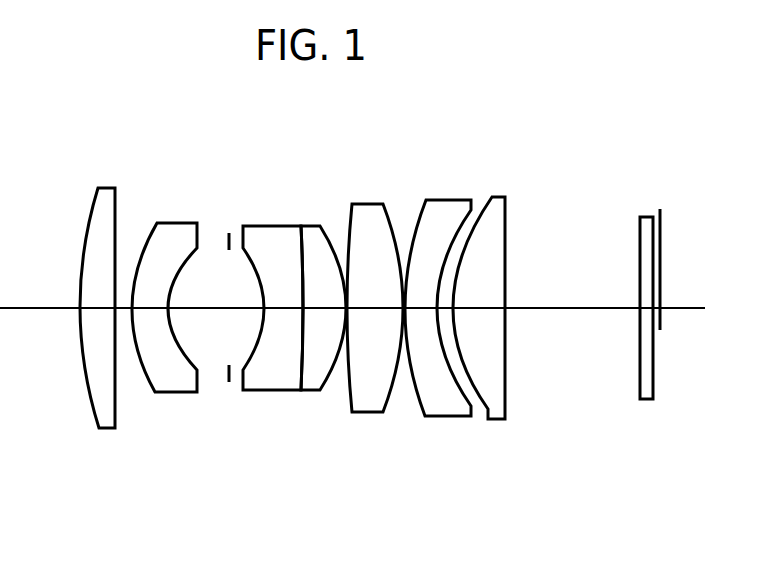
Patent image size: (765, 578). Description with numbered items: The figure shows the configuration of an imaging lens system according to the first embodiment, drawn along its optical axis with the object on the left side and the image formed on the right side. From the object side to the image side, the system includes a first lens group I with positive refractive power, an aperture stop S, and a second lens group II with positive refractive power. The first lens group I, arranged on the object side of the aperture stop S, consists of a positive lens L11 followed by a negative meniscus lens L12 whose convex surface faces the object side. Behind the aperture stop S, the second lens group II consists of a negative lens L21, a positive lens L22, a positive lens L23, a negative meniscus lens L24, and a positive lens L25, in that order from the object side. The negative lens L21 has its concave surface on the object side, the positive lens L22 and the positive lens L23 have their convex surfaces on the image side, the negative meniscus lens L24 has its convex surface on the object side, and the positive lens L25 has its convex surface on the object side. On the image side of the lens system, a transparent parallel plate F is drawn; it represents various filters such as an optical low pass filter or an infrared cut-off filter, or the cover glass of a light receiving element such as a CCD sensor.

The first lens group I is at (85, 154).
The second lens group II is at (257, 154).
The positive lens L11 is at (101, 405).
The negative meniscus lens L12 is at (174, 385).
The aperture stop S is at (229, 240).
The negative lens L21 is at (270, 383).
The positive lens L22 is at (312, 382).
The positive lens L23 is at (368, 404).
The negative meniscus lens L24 is at (436, 408).
The positive lens L25 is at (488, 410).
The transparent parallel plate F is at (645, 229).